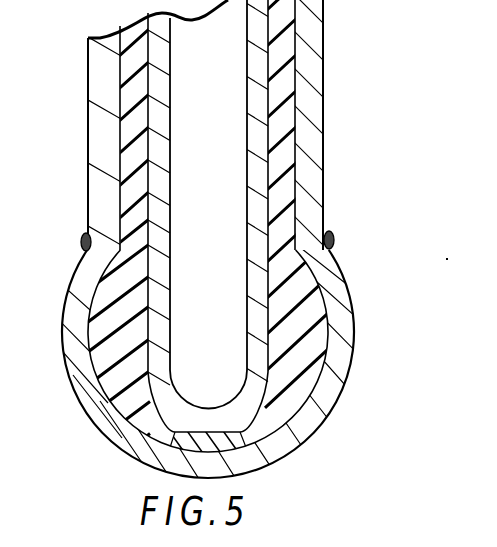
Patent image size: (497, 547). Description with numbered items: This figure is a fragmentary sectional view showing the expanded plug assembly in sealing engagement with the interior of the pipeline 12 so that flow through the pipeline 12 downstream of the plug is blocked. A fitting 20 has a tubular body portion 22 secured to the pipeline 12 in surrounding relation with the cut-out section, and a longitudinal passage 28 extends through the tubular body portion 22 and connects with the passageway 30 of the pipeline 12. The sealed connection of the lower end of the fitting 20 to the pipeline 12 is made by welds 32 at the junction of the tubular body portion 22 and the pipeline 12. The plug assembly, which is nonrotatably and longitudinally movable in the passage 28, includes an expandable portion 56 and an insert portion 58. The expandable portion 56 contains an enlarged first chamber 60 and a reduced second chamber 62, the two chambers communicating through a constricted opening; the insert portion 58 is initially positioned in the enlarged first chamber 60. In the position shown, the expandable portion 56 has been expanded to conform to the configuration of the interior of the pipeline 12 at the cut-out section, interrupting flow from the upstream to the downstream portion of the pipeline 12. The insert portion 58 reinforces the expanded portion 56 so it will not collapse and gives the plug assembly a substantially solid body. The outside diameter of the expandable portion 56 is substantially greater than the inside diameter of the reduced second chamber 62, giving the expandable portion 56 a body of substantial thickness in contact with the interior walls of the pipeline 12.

The pipeline 12 is at (328, 384).
The fitting 20 is at (352, 69).
The tubular body portion 22 is at (312, 111).
The longitudinal passage 28 is at (120, 90).
The passageway 30 is at (136, 372).
The welds 32 is at (82, 237).
The expandable portion 56 is at (305, 312).
The insert portion 58 is at (252, 270).
The enlarged first chamber 60 is at (268, 134).
The reduced second chamber 62 is at (170, 428).